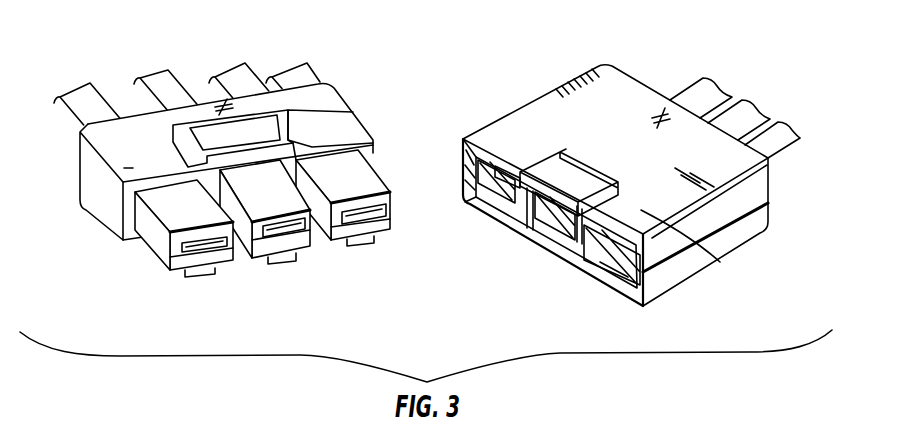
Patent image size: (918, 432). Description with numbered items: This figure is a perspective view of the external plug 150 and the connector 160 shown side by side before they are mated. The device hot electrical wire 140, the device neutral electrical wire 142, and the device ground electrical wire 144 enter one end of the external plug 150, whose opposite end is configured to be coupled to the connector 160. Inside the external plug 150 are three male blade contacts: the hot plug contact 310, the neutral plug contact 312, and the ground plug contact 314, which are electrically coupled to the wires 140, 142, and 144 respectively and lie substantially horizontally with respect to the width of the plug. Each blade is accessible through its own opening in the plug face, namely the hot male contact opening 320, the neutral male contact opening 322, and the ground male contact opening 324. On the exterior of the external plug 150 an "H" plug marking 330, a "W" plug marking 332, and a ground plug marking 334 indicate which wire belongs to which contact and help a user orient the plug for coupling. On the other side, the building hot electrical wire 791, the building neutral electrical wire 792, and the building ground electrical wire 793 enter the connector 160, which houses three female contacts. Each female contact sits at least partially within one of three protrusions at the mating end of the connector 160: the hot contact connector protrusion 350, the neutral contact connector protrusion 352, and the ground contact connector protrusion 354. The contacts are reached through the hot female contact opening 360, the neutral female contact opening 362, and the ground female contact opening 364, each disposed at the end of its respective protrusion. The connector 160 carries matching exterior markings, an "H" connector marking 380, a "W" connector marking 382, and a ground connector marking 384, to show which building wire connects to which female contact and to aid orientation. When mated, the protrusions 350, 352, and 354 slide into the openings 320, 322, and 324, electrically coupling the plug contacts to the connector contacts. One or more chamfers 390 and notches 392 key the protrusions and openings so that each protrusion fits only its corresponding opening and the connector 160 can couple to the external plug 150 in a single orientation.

The device hot electrical wire 140 is at (786, 131).
The device neutral electrical wire 142 is at (708, 89).
The device ground electrical wire 144 is at (743, 110).
The external plug 150 is at (595, 82).
The connector 160 is at (297, 97).
The hot plug contact 310 is at (652, 276).
The neutral plug contact 312 is at (507, 172).
The ground plug contact 314 is at (598, 194).
The hot male contact opening 320 is at (610, 276).
The neutral male contact opening 322 is at (486, 197).
The ground male contact opening 324 is at (560, 240).
The "H" plug marking 330 is at (672, 243).
The "W" plug marking 332 is at (522, 137).
The ground plug marking 334 is at (661, 117).
The hot contact connector protrusion 350 is at (178, 214).
The neutral contact connector protrusion 352 is at (360, 180).
The ground contact connector protrusion 354 is at (287, 201).
The hot female contact opening 360 is at (190, 255).
The neutral female contact opening 362 is at (353, 230).
The ground female contact opening 364 is at (278, 246).
The "H" connector marking 380 is at (113, 168).
The "W" connector marking 382 is at (354, 126).
The ground connector marking 384 is at (213, 103).
The chamfer 390 is at (466, 143).
The notch 392 is at (203, 275).
The building hot electrical wire 791 is at (88, 80).
The building neutral electrical wire 792 is at (243, 72).
The building ground electrical wire 793 is at (162, 78).